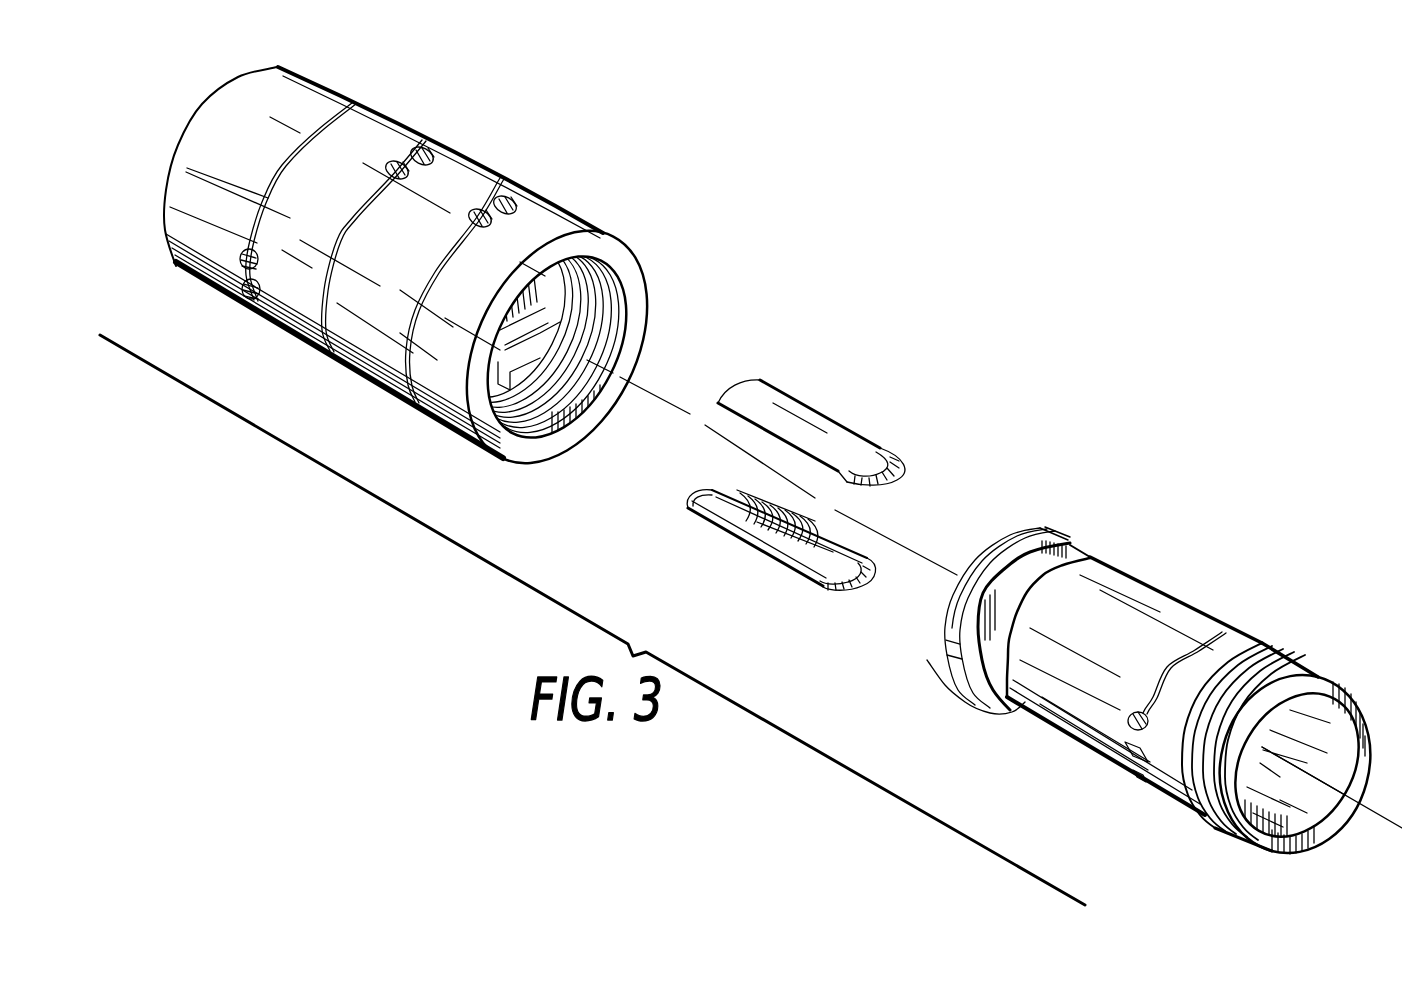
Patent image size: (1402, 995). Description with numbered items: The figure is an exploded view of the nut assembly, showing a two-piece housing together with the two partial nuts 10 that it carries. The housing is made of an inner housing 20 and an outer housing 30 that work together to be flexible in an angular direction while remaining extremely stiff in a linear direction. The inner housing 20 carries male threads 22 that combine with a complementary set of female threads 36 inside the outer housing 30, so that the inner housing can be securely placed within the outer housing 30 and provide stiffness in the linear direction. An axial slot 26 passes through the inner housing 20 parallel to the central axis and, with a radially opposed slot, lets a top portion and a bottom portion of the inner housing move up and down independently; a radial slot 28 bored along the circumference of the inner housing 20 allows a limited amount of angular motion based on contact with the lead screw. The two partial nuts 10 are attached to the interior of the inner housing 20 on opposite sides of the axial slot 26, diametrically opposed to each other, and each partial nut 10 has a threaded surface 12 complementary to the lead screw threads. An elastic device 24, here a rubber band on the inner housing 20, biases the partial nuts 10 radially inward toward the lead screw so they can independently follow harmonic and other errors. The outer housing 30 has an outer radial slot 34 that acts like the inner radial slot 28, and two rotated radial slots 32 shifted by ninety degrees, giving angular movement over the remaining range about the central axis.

The partial nut 10 is at (796, 475).
The threaded surface 12 is at (760, 495).
The inner housing 20 is at (1148, 682).
The male threads 22 is at (1311, 656).
The elastic device 24 is at (1068, 539).
The axial slot 26 is at (943, 650).
The radial slot 28 is at (1170, 661).
The outer housing 30 is at (430, 256).
The rotated radial slots 32 is at (353, 216).
The outer radial slot 34 is at (282, 163).
The female threads 36 is at (588, 328).